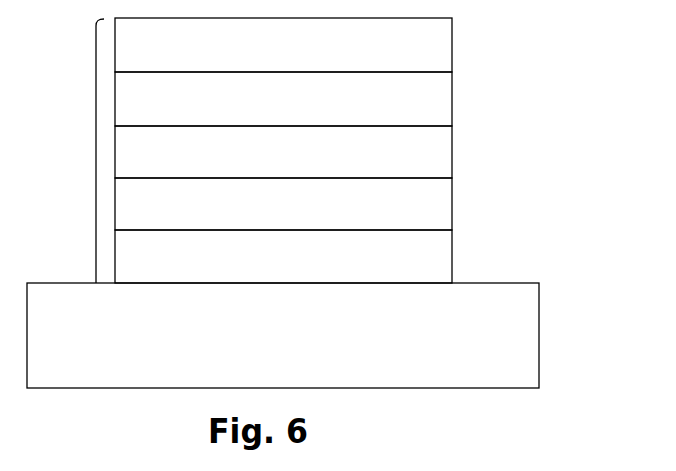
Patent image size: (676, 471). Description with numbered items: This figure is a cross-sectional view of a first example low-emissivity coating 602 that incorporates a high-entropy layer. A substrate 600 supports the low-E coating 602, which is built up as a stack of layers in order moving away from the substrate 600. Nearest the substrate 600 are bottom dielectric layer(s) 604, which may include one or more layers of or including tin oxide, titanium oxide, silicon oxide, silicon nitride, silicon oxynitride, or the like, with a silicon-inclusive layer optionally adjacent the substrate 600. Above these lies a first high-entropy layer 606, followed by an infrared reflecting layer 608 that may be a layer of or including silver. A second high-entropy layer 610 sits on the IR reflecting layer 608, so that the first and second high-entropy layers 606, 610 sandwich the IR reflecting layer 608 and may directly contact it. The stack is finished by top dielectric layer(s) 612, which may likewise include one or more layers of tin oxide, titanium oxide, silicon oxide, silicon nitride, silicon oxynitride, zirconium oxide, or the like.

The substrate 600 is at (539, 336).
The low-emissivity coating 602 is at (96, 153).
The bottom dielectric layer(s) 604 is at (452, 258).
The first high-entropy layer 606 is at (452, 205).
The infrared (IR) reflecting layer 608 is at (452, 153).
The second high-entropy layer 610 is at (452, 100).
The top dielectric layer(s) 612 is at (452, 46).